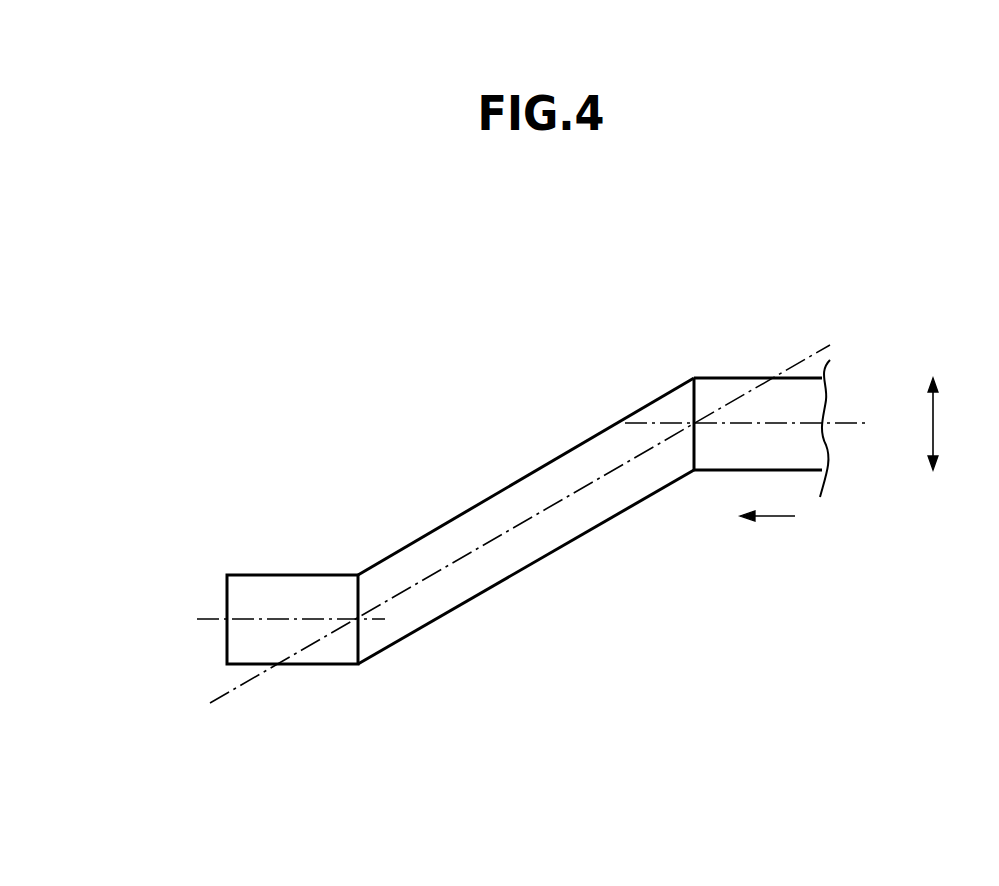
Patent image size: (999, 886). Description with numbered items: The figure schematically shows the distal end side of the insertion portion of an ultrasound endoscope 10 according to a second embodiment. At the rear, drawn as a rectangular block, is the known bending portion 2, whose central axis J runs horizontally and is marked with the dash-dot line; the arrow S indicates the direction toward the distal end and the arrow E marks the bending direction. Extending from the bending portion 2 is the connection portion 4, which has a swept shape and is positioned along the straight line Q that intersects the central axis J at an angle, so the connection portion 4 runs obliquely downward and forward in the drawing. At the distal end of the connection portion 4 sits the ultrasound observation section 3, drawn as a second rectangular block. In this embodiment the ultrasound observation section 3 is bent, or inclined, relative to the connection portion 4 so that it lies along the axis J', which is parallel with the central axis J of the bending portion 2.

The ultrasound endoscope 10 is at (735, 353).
The connection portion 4 is at (573, 472).
The bending portion 2 is at (797, 462).
The ultrasound observation section 3 is at (320, 653).